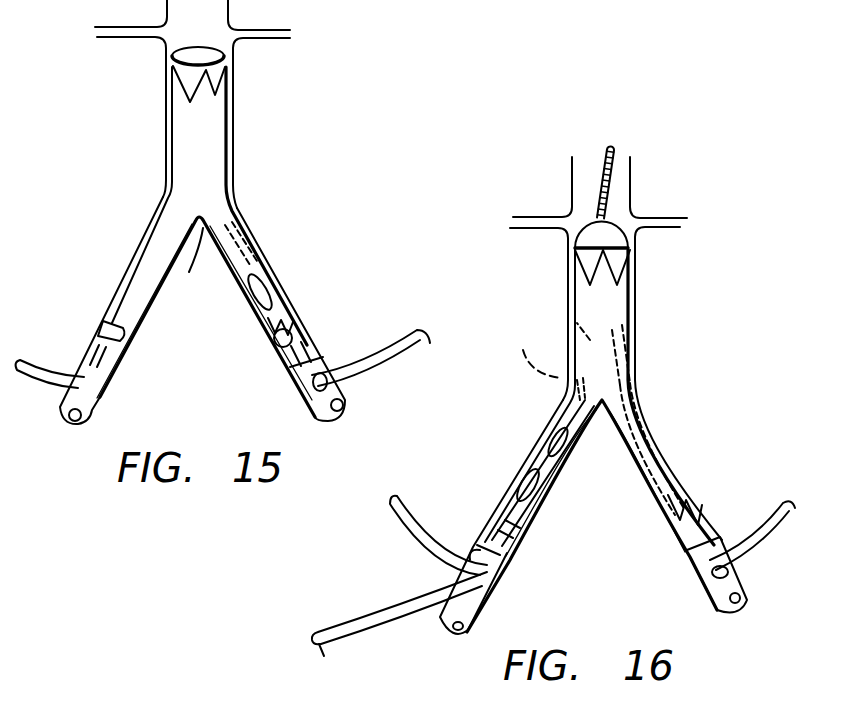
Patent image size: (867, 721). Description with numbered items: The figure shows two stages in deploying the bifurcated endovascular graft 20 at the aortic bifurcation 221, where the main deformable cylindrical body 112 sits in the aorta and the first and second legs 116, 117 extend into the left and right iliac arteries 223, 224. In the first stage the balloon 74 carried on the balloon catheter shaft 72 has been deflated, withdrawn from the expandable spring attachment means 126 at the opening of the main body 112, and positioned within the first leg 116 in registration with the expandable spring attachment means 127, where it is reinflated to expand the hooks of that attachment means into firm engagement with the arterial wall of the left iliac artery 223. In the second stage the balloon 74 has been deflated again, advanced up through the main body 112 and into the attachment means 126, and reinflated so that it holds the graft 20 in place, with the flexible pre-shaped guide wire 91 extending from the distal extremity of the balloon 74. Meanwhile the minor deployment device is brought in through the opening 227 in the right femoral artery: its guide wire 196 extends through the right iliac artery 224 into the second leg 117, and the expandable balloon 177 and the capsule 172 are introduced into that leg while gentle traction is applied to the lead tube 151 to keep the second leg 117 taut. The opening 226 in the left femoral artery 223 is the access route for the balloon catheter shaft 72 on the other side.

In FIG. 15, the endovascular graft 20 is at (240, 107).
In FIG. 16, the endovascular graft 20 is at (645, 290).
In FIG. 15, the balloon catheter shaft 72 is at (363, 370).
In FIG. 16, the balloon catheter shaft 72 is at (623, 387).
In FIG. 15, the balloon 74 is at (262, 292).
In FIG. 16, the balloon 74 is at (590, 227).
In FIG. 16, the guide wire 91 is at (613, 173).
In FIG. 15, the main deformable cylindrical body 112 is at (207, 172).
In FIG. 16, the main deformable cylindrical body 112 is at (613, 357).
In FIG. 15, the first leg 116 is at (250, 243).
In FIG. 16, the first leg 116 is at (653, 458).
In FIG. 15, the second leg 117 is at (143, 268).
In FIG. 16, the second leg 117 is at (508, 396).
In FIG. 15, the expandable spring attachment means 126 is at (225, 67).
In FIG. 16, the expandable spring attachment means 126 is at (613, 263).
In FIG. 15, the expandable spring attachment means 127 is at (292, 322).
In FIG. 16, the expandable spring attachment means 127 is at (683, 493).
In FIG. 16, the lead tube 151 is at (400, 517).
In FIG. 16, the capsule 172 is at (512, 473).
In FIG. 16, the expandable balloon 177 is at (533, 383).
In FIG. 16, the guide wire 196 is at (538, 350).
In FIG. 15, the aortic bifurcation 221 is at (198, 272).
In FIG. 15, the left iliac artery 223 is at (283, 281).
In FIG. 15, the right iliac artery 224 is at (152, 223).
In FIG. 16, the right iliac artery 224 is at (535, 517).
In FIG. 16, the opening 226 is at (713, 597).
In FIG. 16, the opening 227 is at (493, 590).